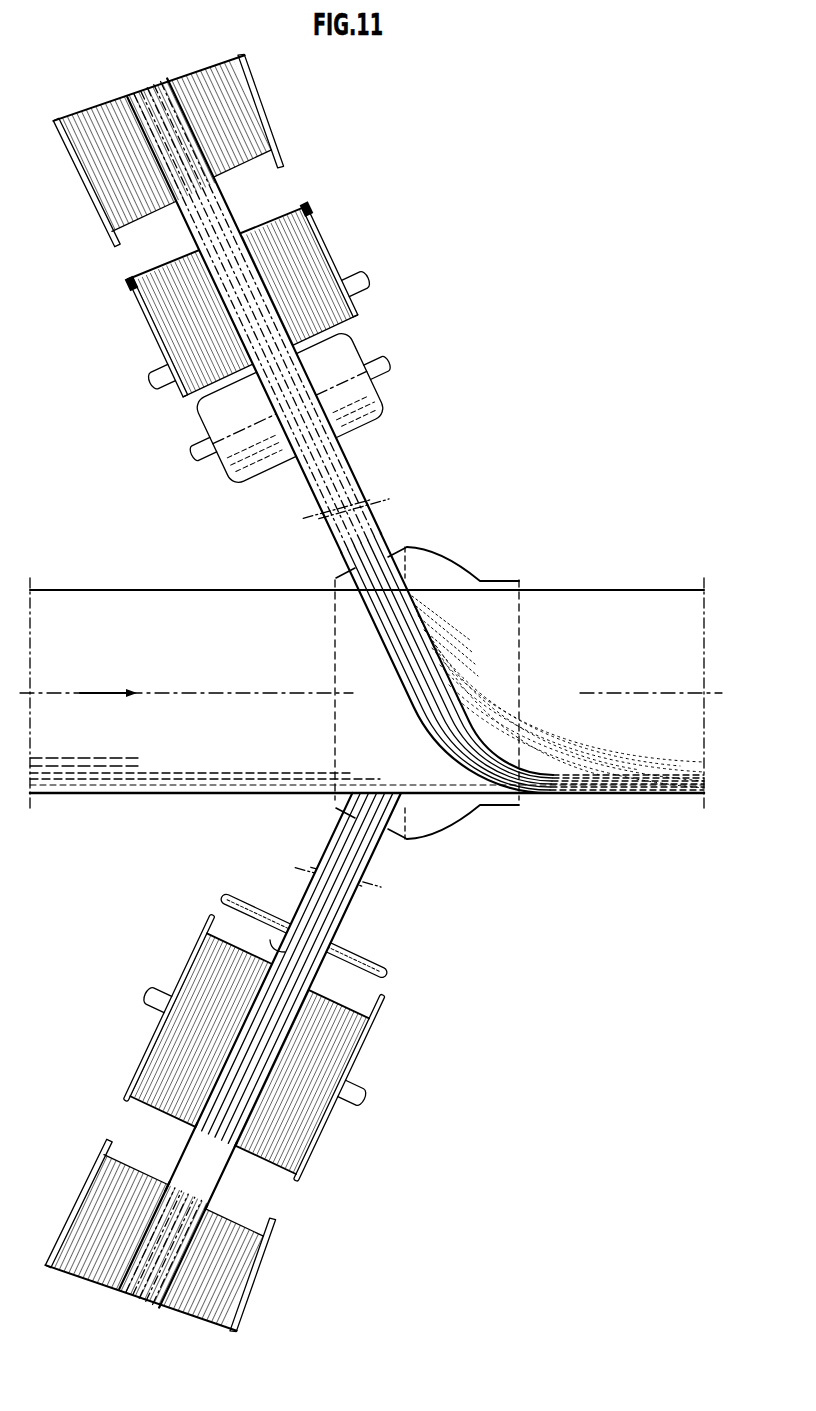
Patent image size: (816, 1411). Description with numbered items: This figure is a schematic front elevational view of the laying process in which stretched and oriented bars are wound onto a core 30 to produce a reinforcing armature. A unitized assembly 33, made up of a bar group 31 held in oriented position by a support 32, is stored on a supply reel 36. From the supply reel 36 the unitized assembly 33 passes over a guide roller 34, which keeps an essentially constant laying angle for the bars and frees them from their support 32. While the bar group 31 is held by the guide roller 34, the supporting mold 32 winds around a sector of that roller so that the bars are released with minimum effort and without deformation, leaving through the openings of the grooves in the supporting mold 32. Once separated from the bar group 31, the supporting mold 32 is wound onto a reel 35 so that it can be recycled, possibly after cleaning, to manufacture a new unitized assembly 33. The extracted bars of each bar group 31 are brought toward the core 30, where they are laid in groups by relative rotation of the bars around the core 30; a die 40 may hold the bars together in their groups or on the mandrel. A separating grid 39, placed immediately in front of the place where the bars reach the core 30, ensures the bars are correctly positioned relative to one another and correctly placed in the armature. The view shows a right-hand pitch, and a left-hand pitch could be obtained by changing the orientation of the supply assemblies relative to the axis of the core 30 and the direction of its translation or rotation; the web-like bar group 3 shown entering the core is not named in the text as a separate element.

The fibrous web 3 is at (244, 213).
The core 30 is at (73, 628).
The bar group 31 is at (366, 480).
The support (supporting mold) 32 is at (297, 476).
The unitized assembly 33 is at (176, 1157).
The guide roller 34 is at (370, 396).
The reel 35 is at (303, 213).
The supply reel 36 is at (250, 102).
The separating grid 39 is at (396, 539).
The die 40 is at (485, 579).